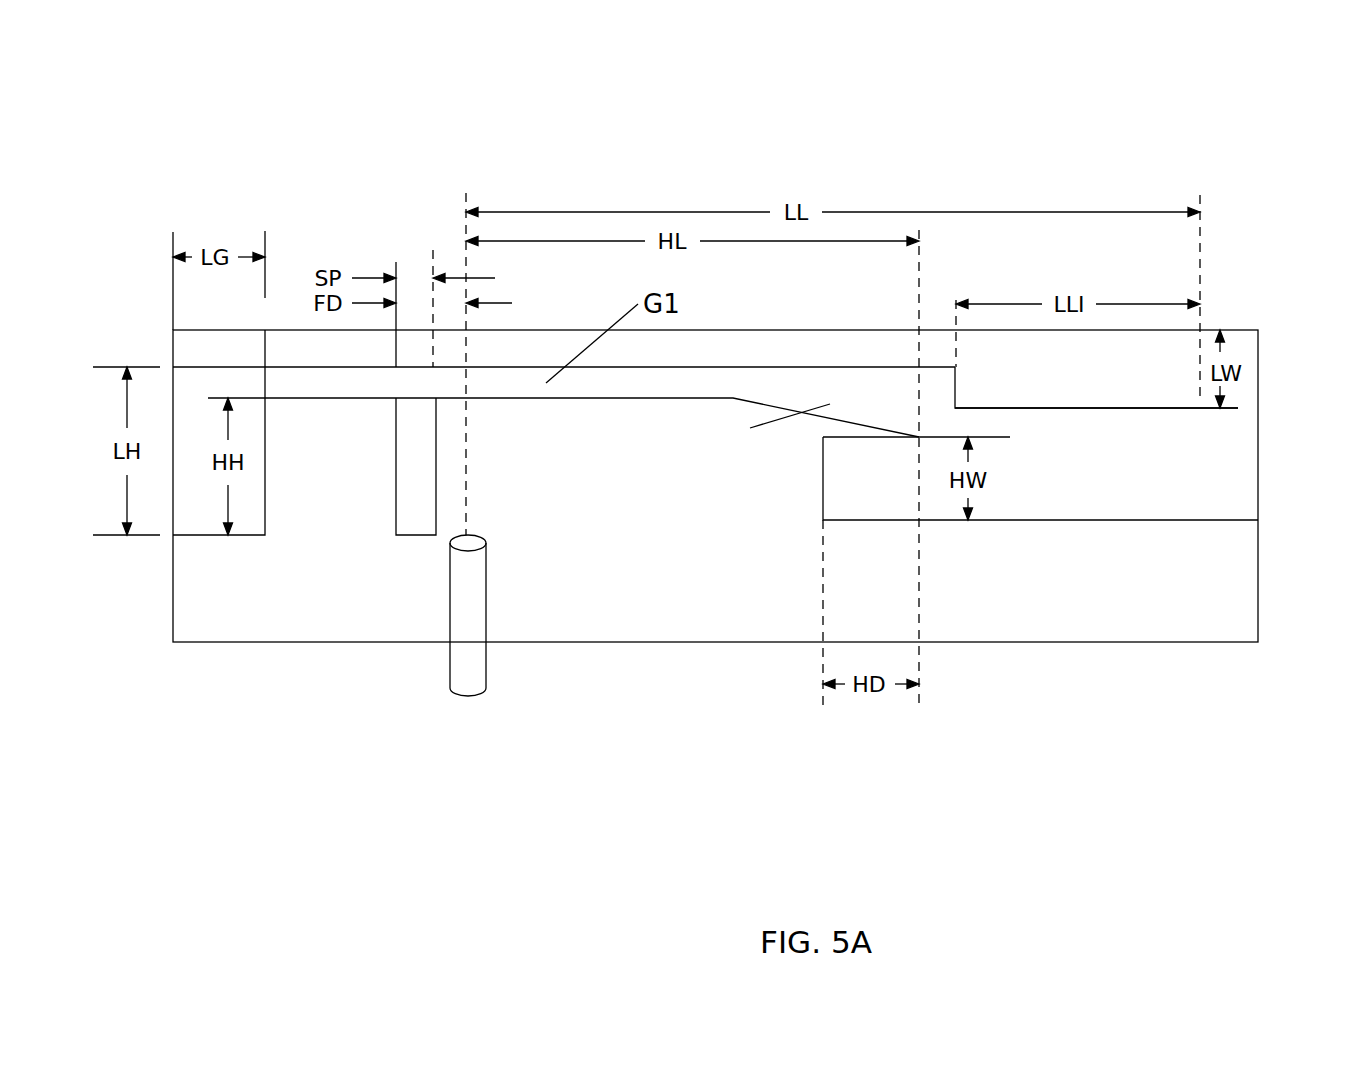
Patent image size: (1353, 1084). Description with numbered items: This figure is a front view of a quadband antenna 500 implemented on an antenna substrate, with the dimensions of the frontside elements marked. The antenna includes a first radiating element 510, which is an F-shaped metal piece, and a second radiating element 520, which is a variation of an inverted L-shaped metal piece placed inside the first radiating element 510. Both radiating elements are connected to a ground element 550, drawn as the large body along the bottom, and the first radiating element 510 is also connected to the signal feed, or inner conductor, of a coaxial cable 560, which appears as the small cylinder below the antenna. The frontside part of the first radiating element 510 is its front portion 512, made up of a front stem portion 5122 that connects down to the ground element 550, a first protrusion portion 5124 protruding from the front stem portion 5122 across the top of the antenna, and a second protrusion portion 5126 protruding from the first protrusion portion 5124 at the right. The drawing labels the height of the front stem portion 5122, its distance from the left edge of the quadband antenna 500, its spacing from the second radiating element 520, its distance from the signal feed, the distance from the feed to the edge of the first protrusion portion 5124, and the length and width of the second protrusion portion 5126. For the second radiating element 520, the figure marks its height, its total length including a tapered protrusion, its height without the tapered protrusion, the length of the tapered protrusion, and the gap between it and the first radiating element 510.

The quadband antenna 500 is at (1062, 124).
The first radiating element 510 is at (1175, 350).
The front portion 512 is at (1003, 382).
The front stem portion 5122 is at (318, 520).
The first protrusion portion 5124 is at (683, 360).
The second protrusion portion 5126 is at (1117, 382).
The second radiating element 520 is at (693, 497).
The ground element 550 is at (1062, 613).
The coaxial cable 560 is at (465, 668).